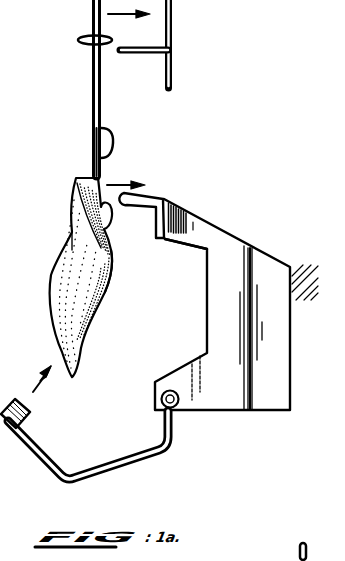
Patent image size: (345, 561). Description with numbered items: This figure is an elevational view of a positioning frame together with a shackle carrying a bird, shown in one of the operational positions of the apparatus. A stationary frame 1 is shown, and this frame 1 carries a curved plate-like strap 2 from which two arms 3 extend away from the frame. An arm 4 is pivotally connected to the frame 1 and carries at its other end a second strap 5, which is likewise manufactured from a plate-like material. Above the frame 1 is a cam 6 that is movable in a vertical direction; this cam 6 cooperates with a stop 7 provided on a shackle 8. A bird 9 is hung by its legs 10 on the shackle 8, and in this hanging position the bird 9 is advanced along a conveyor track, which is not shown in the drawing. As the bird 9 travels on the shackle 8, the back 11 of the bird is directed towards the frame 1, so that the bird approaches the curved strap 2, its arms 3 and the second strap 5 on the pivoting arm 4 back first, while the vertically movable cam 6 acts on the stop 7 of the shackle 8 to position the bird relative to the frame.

The stationary frame 1 is at (254, 262).
The curved plate-like strap 2 is at (172, 244).
The arms 3 is at (152, 198).
The arm 4 is at (112, 466).
The second strap 5 is at (30, 413).
The cam 6 is at (139, 55).
The stop 7 is at (83, 47).
The shackle 8 is at (91, 104).
The bird 9 is at (68, 268).
The legs 10 is at (75, 180).
The back 11 is at (114, 278).